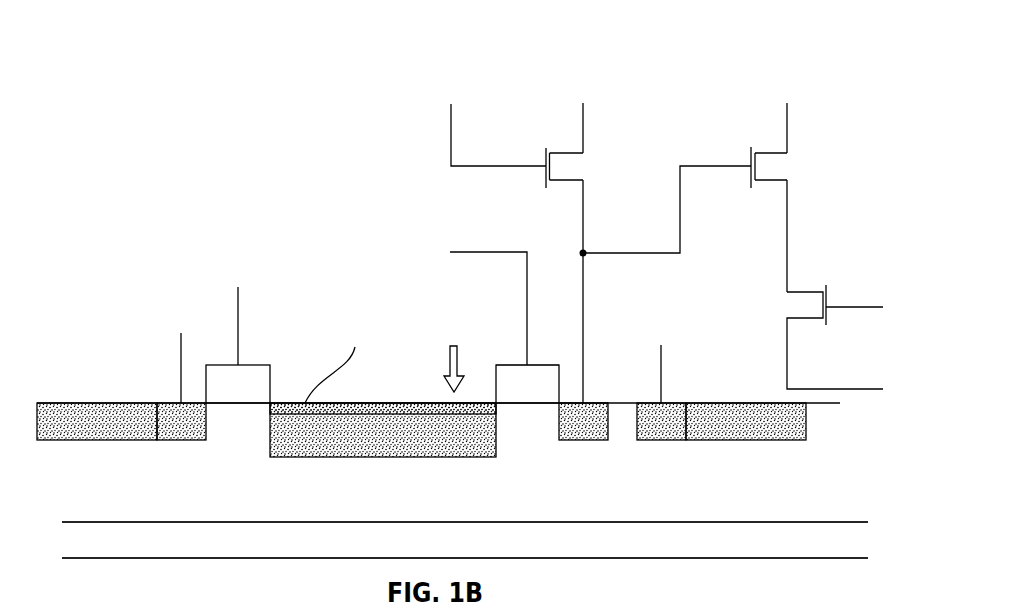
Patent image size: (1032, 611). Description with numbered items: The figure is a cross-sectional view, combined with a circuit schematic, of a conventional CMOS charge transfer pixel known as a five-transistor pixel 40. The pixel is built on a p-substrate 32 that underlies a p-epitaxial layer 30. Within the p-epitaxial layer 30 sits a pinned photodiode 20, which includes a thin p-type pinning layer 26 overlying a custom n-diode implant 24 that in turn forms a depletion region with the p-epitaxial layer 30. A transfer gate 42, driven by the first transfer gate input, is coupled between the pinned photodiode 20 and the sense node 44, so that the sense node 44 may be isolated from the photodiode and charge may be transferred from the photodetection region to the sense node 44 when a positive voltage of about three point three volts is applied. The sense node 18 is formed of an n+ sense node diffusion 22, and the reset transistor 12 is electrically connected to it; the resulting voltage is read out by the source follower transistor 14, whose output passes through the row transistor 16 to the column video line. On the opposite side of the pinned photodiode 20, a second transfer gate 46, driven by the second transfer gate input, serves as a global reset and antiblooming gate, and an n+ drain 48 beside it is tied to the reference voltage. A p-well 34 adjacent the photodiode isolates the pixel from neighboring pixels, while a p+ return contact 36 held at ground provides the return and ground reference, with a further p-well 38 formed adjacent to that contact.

The reset transistor 12 is at (567, 152).
The source follower transistor 14 is at (771, 152).
The row transistor 16 is at (797, 292).
The sense node 18 is at (540, 353).
The pinned photodiode 20 is at (469, 395).
The n+ sense node diffusion 22 is at (598, 403).
The n-diode implant 24 is at (340, 458).
The p-type pinning layer 26 is at (400, 403).
The p-epitaxial layer 30 is at (445, 515).
The p-substrate 32 is at (570, 553).
The p-well 34 is at (97, 403).
The p+ return contact 36 is at (673, 403).
The p-well 38 is at (740, 441).
The 5T pixel 40 is at (233, 50).
The transfer gate 42 is at (522, 365).
The sense node 44 is at (588, 515).
The second transfer gate 46 is at (250, 365).
The n+ drain 48 is at (180, 441).